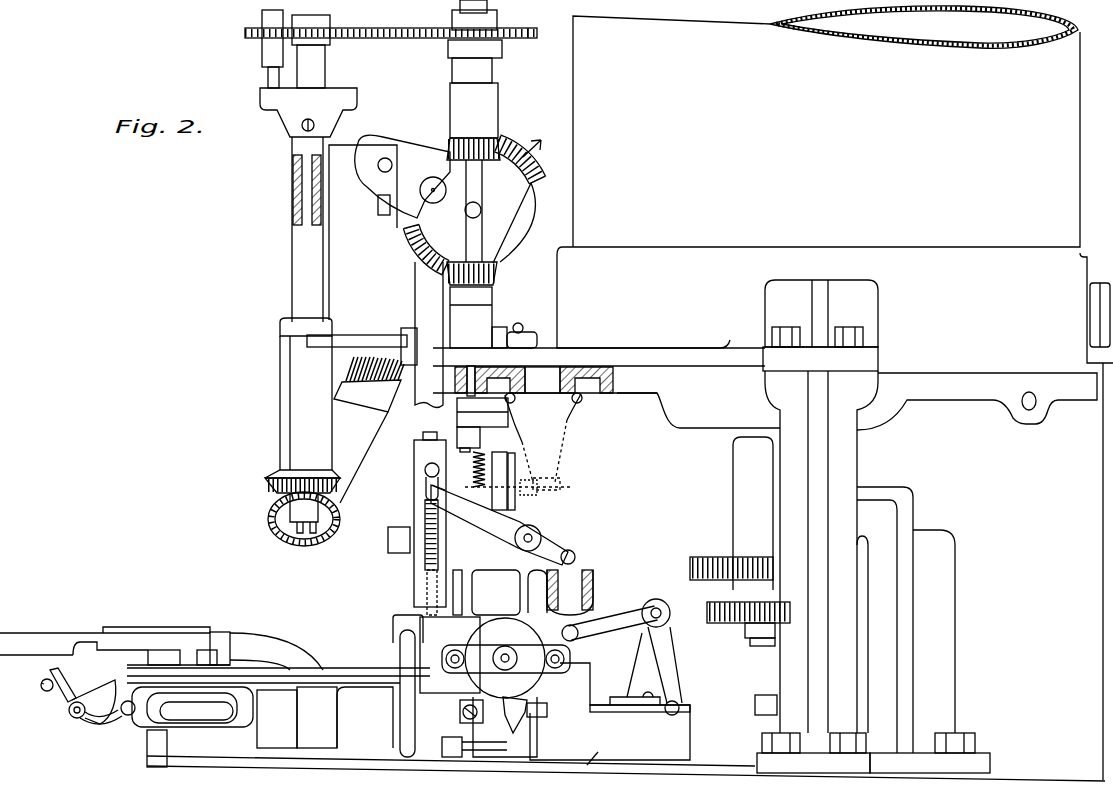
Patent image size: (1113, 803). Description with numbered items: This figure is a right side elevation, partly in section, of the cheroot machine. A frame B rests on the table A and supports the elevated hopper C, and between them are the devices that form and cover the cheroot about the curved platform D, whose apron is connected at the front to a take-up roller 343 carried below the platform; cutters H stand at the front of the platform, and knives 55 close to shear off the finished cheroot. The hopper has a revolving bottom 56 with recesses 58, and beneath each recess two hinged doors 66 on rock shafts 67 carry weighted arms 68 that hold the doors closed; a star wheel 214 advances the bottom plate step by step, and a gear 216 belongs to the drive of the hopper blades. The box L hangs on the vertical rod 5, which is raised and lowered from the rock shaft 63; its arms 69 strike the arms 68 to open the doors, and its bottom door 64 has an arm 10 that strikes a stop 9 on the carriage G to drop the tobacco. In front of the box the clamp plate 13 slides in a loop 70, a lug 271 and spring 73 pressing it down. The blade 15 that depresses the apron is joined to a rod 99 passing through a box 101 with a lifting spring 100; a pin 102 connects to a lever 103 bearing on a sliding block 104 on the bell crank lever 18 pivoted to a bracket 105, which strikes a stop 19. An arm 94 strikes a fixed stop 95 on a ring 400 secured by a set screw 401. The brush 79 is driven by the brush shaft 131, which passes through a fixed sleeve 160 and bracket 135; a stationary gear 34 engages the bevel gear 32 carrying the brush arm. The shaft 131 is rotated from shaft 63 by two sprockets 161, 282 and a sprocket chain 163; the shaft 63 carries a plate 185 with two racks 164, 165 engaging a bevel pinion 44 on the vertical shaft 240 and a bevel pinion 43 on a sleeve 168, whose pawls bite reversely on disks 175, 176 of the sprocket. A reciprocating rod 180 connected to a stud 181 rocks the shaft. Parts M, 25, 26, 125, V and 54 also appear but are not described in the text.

The sprocket 282 is at (245, 34).
The sprocket chain 163 is at (335, 49).
The fixed sleeve 160 is at (293, 178).
The brush shaft 131 is at (300, 212).
The disk 175 is at (453, 22).
The disk 176 is at (505, 38).
The sprocket 161 is at (524, 42).
The sleeve 168 is at (460, 68).
The rack 164 is at (505, 142).
The plate 185 is at (516, 219).
The rock shaft 63 is at (468, 212).
The stud 181 is at (428, 184).
The bevel pinion 43 is at (448, 170).
The vertical shaft 240 is at (508, 236).
The rack 165 is at (410, 262).
The bevel pinion 44 is at (498, 270).
The bracket M is at (340, 240).
The reciprocating rod 180 is at (378, 212).
The vertical rod 5 is at (471, 362).
The brush 79 is at (345, 372).
The bracket 135 is at (280, 405).
The stationary gear 34 is at (268, 474).
The bevel gear 32 is at (273, 518).
The revolving bottom 56 is at (765, 389).
The recesses 58 is at (534, 380).
The weighted arms 68 is at (664, 408).
The hinged closing doors 66 is at (522, 425).
The rock shafts 67 is at (583, 417).
The arms 69 is at (570, 440).
The loop 70 is at (503, 472).
The spring 73 is at (470, 469).
The clamp plate 13 is at (517, 505).
The door 64 is at (572, 487).
The box 101 is at (414, 448).
The pin 102 is at (425, 470).
The spring 100 is at (422, 560).
The stop 9 is at (388, 541).
The lever 103 is at (490, 525).
The box L is at (554, 534).
The arm 10 is at (442, 488).
The lug 271 is at (425, 505).
The blade 15 is at (462, 595).
The sliding block 104 is at (577, 580).
The carriage G is at (506, 658).
The set screw 401 is at (450, 655).
The vertical rod 99 is at (393, 616).
The bar 25 is at (407, 713).
The block 26 is at (442, 747).
The arm 94 is at (522, 733).
The fixed stop 95 is at (547, 712).
The ring 400 is at (581, 712).
The table A is at (595, 750).
The bell crank lever 18 is at (616, 627).
The bracket 105 is at (645, 663).
The stop 19 is at (755, 705).
The star wheel 214 is at (705, 558).
The gear 216 is at (712, 605).
The hopper C is at (835, 393).
The notch 125 is at (1013, 410).
The frame B is at (858, 470).
The knives 55 is at (161, 675).
The pin V is at (38, 676).
The link 54 is at (107, 728).
The cutters H is at (239, 706).
The take-up roller 343 is at (222, 712).
The platform D is at (382, 680).